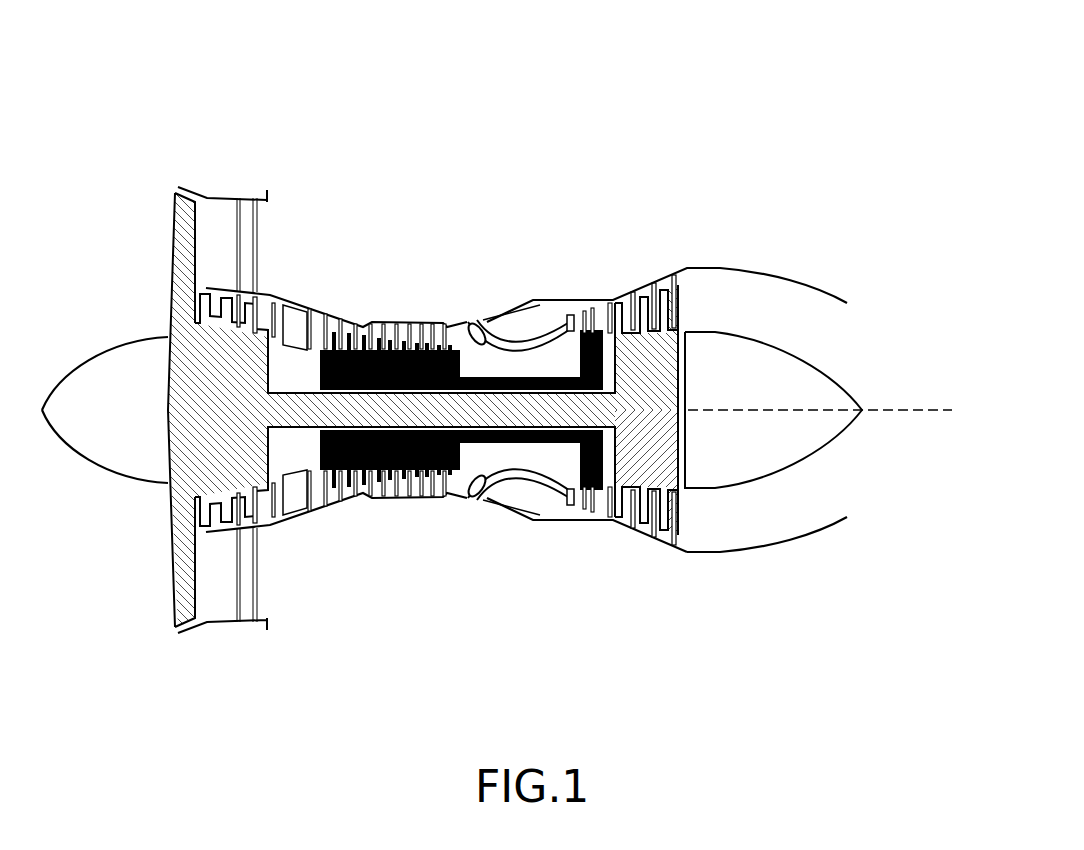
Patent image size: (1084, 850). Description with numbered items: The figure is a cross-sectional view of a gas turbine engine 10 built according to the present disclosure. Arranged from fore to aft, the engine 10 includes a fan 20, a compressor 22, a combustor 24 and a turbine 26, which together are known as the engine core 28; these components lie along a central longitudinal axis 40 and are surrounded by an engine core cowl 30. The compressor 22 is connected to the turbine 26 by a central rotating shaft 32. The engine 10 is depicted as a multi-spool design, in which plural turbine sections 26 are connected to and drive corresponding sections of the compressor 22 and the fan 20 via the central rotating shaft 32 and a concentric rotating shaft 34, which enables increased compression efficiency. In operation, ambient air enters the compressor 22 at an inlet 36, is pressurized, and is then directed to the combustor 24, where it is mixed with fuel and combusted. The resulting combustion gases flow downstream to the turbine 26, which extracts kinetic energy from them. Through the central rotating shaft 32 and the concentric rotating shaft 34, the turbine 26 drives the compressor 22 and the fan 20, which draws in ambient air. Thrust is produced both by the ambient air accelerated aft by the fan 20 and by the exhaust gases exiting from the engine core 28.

The gas turbine engine 10 is at (282, 112).
The fan 20 is at (177, 280).
The compressor 22 is at (350, 338).
The combustor 24 is at (513, 338).
The turbine 26 is at (630, 300).
The engine core 28 is at (603, 543).
The engine core cowl 30 is at (377, 498).
The central rotating shaft 32 is at (282, 427).
The concentric rotating shaft 34 is at (521, 447).
The inlet 36 is at (205, 513).
The central longitudinal axis 40 is at (895, 411).